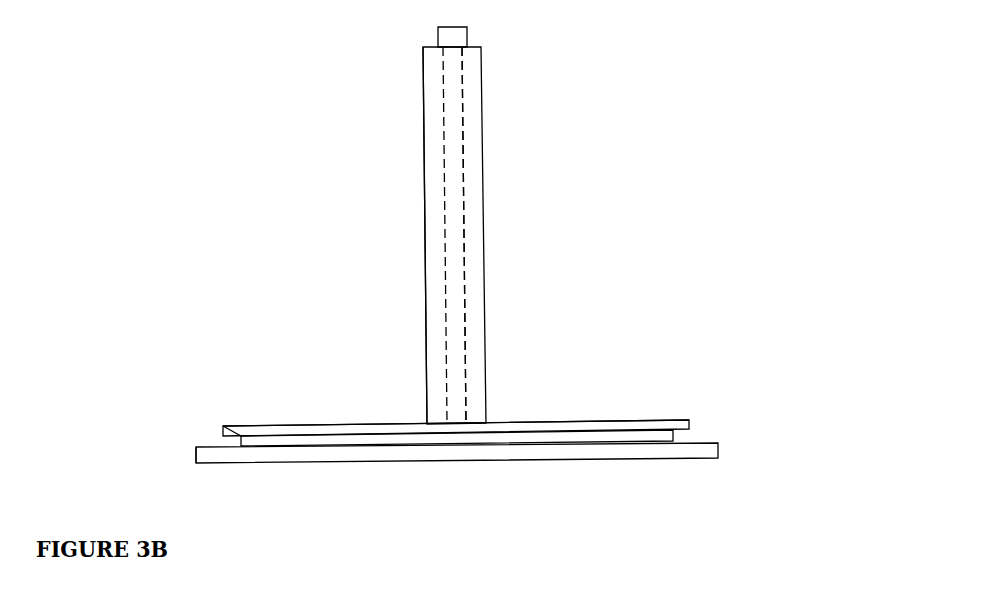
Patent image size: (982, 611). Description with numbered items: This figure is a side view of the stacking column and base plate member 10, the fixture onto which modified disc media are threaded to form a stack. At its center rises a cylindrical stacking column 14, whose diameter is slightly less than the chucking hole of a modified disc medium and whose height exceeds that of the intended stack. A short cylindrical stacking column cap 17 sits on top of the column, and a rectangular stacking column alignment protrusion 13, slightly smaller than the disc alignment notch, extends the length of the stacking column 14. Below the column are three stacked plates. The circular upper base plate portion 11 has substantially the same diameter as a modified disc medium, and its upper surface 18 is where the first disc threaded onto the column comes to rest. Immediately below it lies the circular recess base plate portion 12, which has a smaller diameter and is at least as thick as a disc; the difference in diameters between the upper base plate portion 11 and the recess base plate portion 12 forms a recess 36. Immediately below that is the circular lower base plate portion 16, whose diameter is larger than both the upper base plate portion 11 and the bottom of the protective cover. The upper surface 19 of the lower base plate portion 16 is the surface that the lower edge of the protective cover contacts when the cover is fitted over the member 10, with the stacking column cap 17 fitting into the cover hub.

The stacking column and base plate member 10 is at (496, 52).
The upper base plate portion 11 is at (693, 423).
The recess base plate portion 12 is at (680, 436).
The stacking column alignment protrusion 13 is at (467, 105).
The stacking column 14 is at (423, 114).
The lower base plate portion 16 is at (725, 453).
The stacking column cap 17 is at (435, 33).
The upper surface of the upper base plate portion 18 is at (333, 421).
The upper surface of the lower base plate portion 19 is at (207, 444).
The recess 36 is at (233, 437).